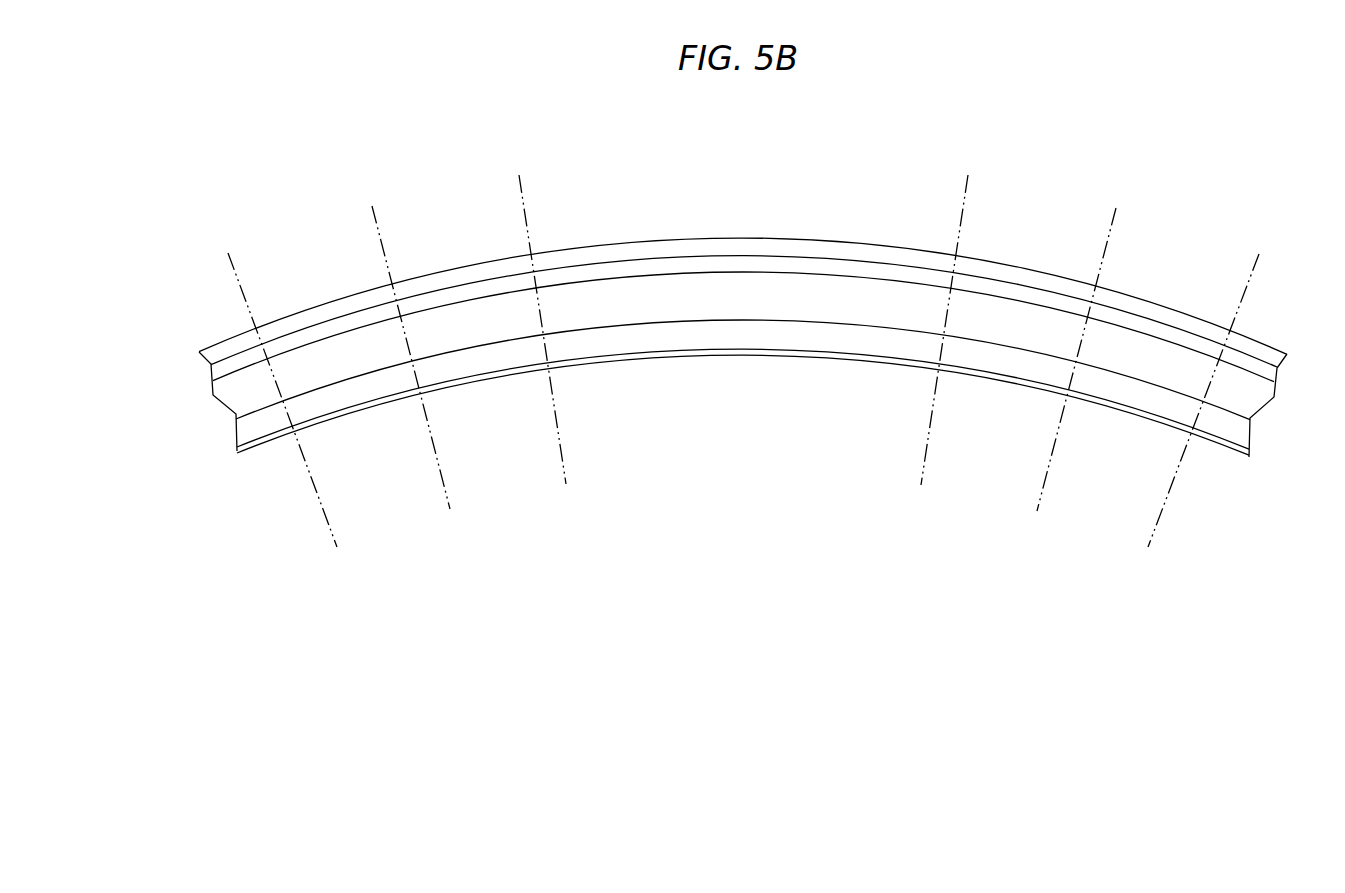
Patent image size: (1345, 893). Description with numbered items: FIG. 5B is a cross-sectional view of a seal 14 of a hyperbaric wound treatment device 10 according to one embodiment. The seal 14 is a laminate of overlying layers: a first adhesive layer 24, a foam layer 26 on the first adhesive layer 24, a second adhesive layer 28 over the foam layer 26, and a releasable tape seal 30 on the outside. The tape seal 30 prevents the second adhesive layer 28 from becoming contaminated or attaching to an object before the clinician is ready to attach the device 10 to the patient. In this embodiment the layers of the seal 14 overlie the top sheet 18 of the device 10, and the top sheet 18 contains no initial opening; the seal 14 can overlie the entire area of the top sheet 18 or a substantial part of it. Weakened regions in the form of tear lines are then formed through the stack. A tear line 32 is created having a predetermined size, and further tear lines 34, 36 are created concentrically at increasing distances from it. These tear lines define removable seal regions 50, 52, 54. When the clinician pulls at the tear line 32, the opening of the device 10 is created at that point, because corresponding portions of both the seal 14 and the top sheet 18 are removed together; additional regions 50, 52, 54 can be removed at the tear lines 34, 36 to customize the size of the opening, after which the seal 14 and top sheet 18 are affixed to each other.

The hyperbaric wound treatment device 10 is at (753, 148).
The seal 14 is at (185, 375).
The top sheet 18 is at (1220, 443).
The first adhesive layer 24 is at (1238, 438).
The foam layer 26 is at (1263, 393).
The second adhesive layer 28 is at (1268, 373).
The releasable tape seal 30 is at (1260, 353).
The tear line 32 is at (962, 201).
The tear line 34 is at (1108, 232).
The tear line 36 is at (1248, 278).
The removable seal region 50 is at (482, 245).
The removable seal region 52 is at (328, 282).
The removable seal region 54 is at (212, 322).